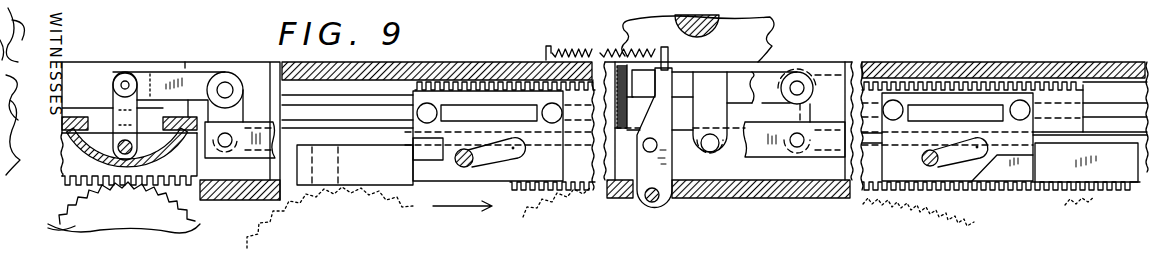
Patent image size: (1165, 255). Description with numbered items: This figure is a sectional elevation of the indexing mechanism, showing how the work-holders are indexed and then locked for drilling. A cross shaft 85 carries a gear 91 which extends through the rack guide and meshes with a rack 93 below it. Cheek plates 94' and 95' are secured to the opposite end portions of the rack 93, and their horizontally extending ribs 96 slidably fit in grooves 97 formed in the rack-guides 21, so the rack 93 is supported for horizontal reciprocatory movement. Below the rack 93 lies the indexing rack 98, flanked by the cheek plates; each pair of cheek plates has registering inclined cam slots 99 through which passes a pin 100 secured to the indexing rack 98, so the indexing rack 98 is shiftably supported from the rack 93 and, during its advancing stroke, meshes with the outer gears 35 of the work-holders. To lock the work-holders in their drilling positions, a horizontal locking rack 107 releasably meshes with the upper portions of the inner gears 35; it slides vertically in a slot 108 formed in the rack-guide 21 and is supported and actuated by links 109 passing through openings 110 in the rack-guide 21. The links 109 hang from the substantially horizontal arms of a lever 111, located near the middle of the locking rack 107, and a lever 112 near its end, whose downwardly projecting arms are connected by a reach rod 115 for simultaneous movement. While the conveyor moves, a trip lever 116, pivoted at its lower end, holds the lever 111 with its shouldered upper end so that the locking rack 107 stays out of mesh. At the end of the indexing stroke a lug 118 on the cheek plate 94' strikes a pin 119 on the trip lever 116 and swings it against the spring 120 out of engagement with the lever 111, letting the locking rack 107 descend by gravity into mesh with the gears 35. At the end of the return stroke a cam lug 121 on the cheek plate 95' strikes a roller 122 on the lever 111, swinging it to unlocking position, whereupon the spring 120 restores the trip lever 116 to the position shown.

The rack-guide 21 is at (897, 62).
The gear 35 is at (75, 224).
The cross shaft 85 is at (708, 34).
The gear 91 is at (772, 34).
The rack 93 is at (1058, 95).
The cheek plate 94' is at (500, 110).
The cheek plate 95' is at (957, 106).
The rib 96 is at (510, 108).
The groove 97 is at (1112, 113).
The indexing rack 98 is at (1068, 170).
The inclined cam slot 99 is at (955, 153).
The pin 100 is at (911, 165).
The locking rack 107 is at (72, 158).
The slot 108 is at (192, 192).
The link 109 is at (118, 100).
The opening 110 is at (102, 118).
The lever 111 is at (799, 74).
The lever 112 is at (228, 72).
The reach rod 115 is at (268, 158).
The trip lever 116 is at (660, 200).
The lug 118 is at (418, 150).
The pin 119 is at (654, 148).
The spring 120 is at (569, 40).
The cam lug 121 is at (1010, 172).
The roller 122 is at (715, 125).